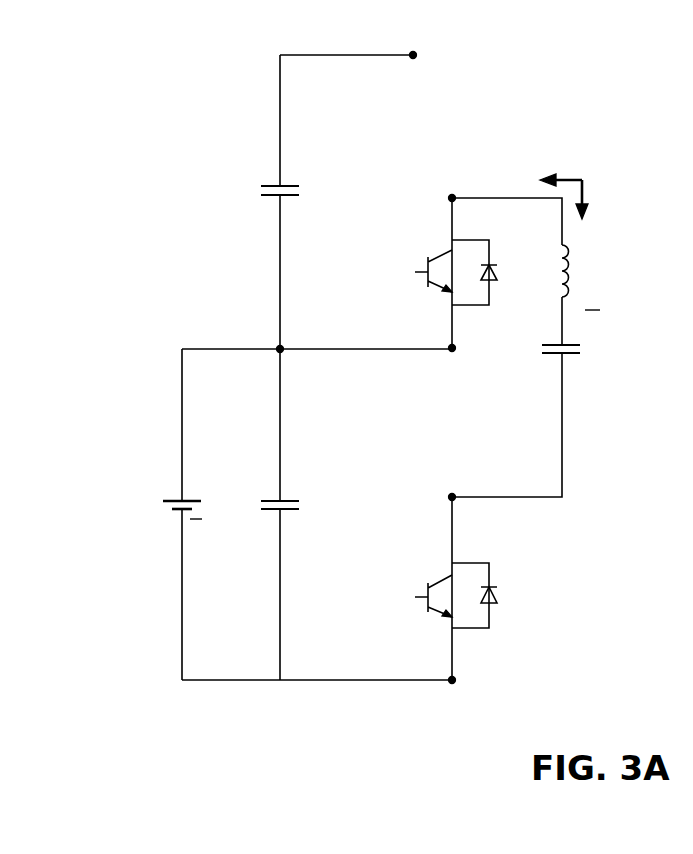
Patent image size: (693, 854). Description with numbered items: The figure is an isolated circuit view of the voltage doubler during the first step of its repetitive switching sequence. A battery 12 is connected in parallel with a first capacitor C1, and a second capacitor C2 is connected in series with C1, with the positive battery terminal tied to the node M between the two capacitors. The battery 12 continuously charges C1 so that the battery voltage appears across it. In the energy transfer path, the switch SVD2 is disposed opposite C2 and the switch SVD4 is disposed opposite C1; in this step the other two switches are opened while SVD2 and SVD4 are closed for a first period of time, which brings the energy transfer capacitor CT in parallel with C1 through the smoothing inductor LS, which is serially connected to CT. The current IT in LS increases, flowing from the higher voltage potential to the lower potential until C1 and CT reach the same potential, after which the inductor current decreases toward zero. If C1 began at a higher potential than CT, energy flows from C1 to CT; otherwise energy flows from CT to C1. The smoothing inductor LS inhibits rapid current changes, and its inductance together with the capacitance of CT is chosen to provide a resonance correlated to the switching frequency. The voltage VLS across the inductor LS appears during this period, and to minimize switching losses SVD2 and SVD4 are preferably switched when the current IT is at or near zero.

The battery 12 is at (172, 497).
The first capacitor C1 is at (291, 529).
The second capacitor C2 is at (291, 214).
The node M is at (317, 334).
The switch SVD2 is at (431, 273).
The switch SVD4 is at (431, 590).
The smoothing inductor LS is at (550, 271).
The voltage across the inductor VLS is at (596, 269).
The energy transfer capacitor CT is at (551, 368).
The current IT is at (573, 180).